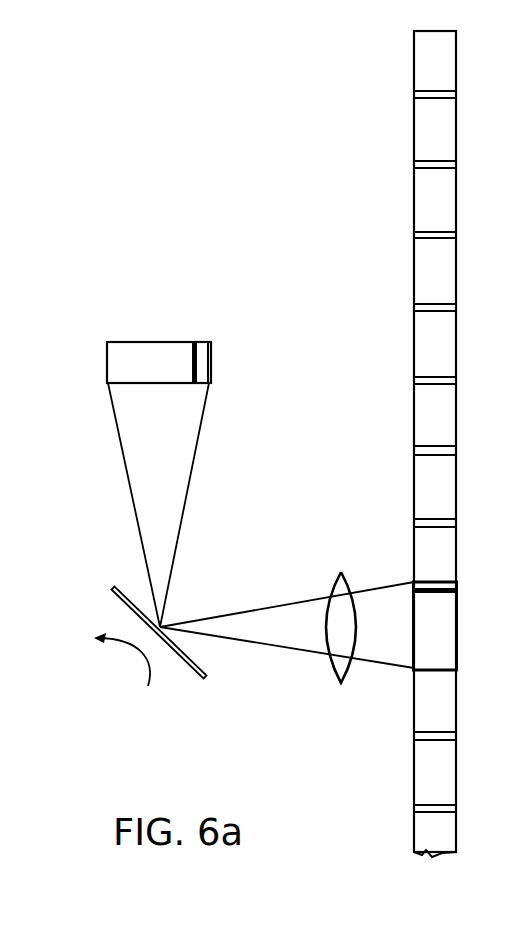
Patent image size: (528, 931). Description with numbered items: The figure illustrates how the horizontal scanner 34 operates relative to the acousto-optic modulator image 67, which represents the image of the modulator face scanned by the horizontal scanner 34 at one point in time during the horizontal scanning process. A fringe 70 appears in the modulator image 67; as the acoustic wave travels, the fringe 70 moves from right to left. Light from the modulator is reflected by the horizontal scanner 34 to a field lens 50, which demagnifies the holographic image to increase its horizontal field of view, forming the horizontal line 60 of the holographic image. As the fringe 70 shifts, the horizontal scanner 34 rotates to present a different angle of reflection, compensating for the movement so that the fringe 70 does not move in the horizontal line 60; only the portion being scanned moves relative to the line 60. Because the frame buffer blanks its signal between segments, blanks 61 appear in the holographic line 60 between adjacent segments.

The horizontal line of the holographic image 60 is at (386, 220).
The blanks 61 is at (423, 802).
The acousto-optic modulator image 67 is at (165, 340).
The fringe 70 is at (198, 368).
The field lens 50 is at (345, 580).
The horizontal scanner 34 is at (173, 682).